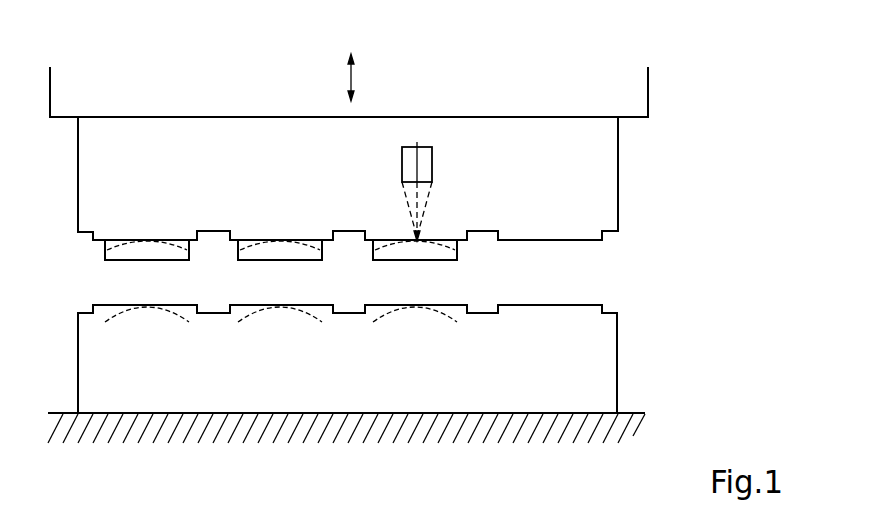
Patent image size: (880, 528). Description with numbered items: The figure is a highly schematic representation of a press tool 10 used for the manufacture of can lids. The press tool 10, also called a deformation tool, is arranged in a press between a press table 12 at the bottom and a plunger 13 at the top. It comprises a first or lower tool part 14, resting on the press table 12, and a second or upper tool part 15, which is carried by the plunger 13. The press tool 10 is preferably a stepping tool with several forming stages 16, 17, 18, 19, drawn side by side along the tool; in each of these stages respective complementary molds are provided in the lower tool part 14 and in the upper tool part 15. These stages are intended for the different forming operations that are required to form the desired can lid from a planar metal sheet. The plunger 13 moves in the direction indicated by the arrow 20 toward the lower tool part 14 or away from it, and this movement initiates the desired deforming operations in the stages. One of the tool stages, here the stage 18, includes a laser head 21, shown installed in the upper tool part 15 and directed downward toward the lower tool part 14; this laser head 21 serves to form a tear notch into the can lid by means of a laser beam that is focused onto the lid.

The press tool 10 is at (702, 232).
The press table 12 is at (632, 415).
The plunger 13 is at (648, 92).
The lower tool part 14 is at (617, 357).
The upper tool part 15 is at (618, 182).
The forming stage 16 is at (147, 332).
The forming stage 17 is at (282, 332).
The forming stage 18 is at (417, 332).
The forming stage 19 is at (550, 332).
The arrow 20 is at (352, 76).
The laser head 21 is at (433, 165).